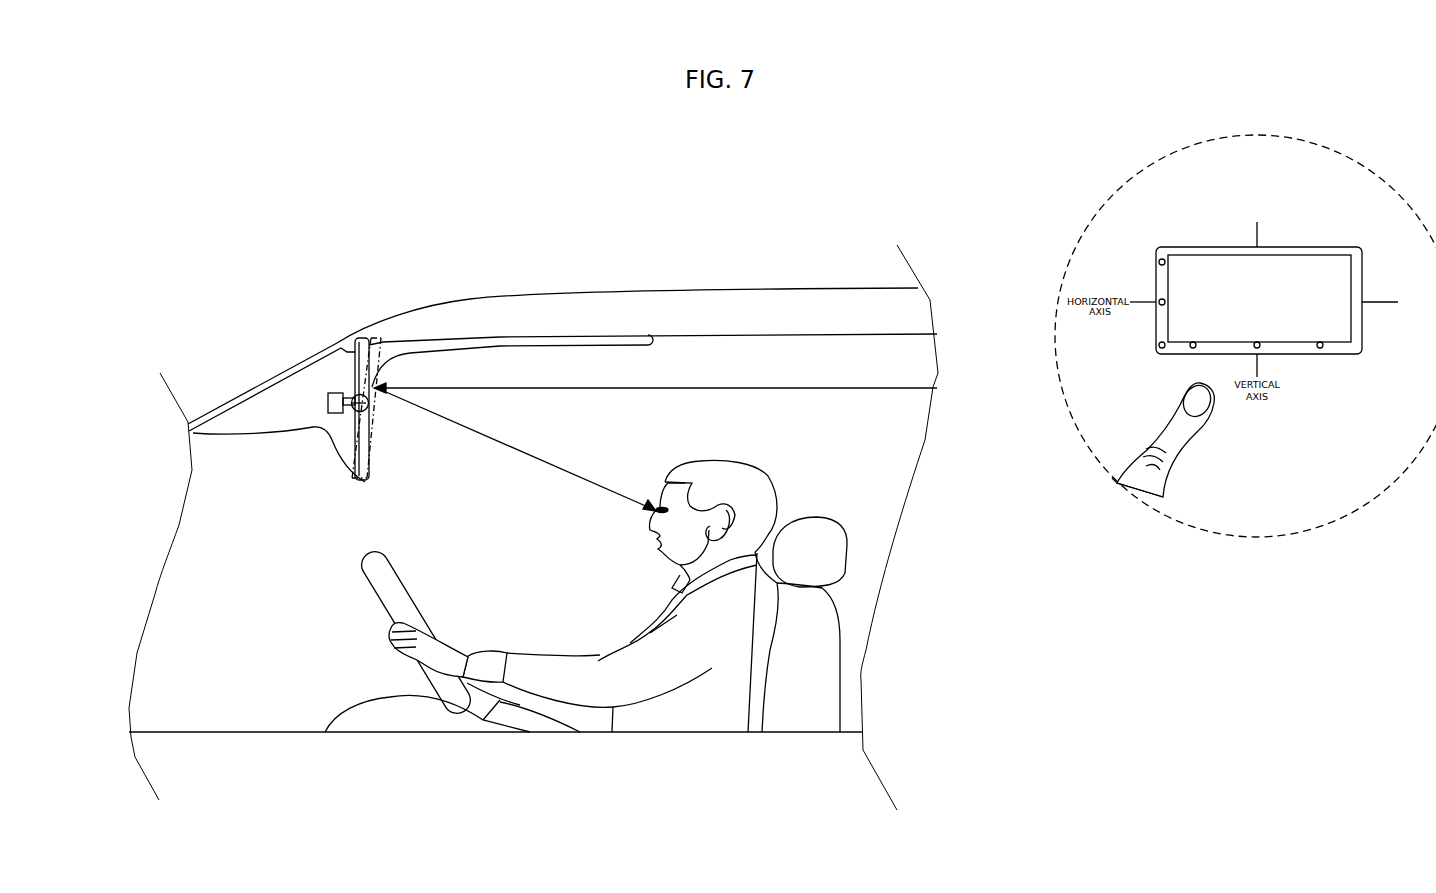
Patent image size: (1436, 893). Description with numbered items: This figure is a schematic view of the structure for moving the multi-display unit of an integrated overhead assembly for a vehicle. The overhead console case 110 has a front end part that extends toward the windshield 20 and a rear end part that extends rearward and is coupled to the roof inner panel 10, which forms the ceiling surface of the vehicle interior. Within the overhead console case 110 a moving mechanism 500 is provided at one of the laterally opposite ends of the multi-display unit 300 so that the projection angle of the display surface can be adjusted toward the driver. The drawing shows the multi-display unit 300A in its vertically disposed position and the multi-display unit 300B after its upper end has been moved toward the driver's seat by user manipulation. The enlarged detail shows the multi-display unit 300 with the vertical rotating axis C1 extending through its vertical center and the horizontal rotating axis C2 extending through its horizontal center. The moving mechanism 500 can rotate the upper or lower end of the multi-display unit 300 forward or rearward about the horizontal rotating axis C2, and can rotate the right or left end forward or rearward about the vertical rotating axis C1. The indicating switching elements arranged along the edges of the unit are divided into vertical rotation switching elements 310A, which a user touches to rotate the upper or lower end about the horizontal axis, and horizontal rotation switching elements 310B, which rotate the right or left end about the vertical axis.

The roof inner panel 10 is at (757, 334).
The windshield 20 is at (230, 398).
The overhead console case 110 is at (271, 381).
The multi-display unit in vertically disposed position 300A is at (355, 339).
The multi-display unit moved toward driver's seat 300B is at (381, 338).
The moving mechanism 500 is at (338, 413).
The multi-display unit 300 is at (1292, 280).
The vertical rotation switching elements 310A is at (1159, 264).
The horizontal rotation switching elements 310B is at (1196, 347).
The vertical rotating axis C1 is at (1256, 221).
The horizontal rotating axis C2 is at (1394, 302).